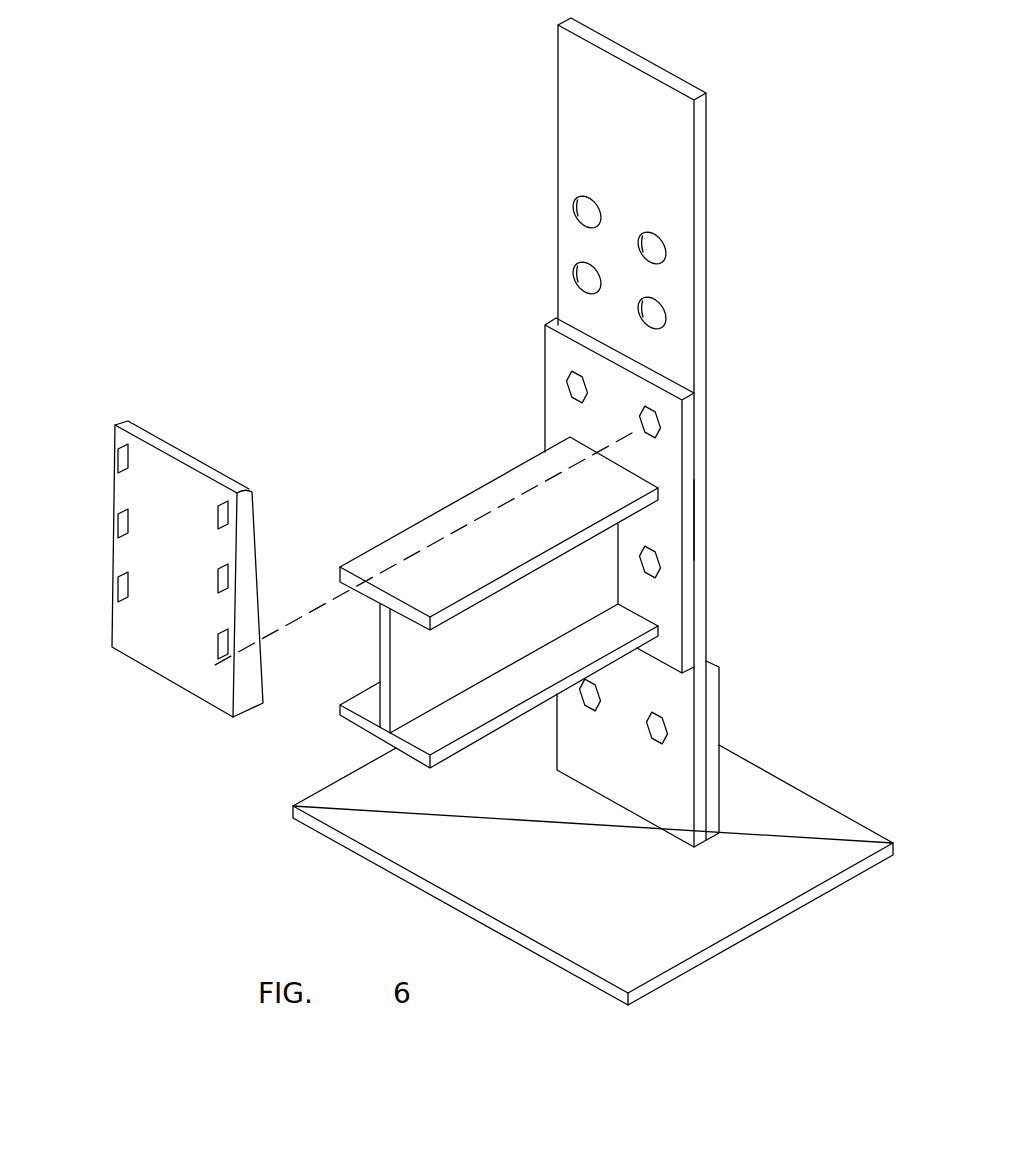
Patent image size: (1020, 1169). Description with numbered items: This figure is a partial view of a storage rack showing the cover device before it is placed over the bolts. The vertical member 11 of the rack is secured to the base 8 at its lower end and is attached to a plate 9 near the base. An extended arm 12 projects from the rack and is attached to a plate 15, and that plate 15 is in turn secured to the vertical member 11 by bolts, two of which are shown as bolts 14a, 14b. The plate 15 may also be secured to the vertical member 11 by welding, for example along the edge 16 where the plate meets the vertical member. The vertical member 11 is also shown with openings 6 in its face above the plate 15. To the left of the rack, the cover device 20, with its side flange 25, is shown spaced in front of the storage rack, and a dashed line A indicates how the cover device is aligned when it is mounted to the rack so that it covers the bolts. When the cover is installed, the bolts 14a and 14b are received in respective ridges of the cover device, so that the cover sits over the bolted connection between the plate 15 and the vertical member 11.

The holes 6 is at (663, 247).
The base 8 is at (775, 882).
The plate 9 is at (712, 703).
The vertical member 11 is at (583, 150).
The extended arm 12 is at (470, 503).
The bolt 14a is at (566, 383).
The bolt 14b is at (660, 426).
The plate 15 is at (688, 522).
The edge 16 is at (670, 378).
The side plate 20 is at (142, 493).
The flange 25 is at (243, 538).
The line A is at (531, 490).